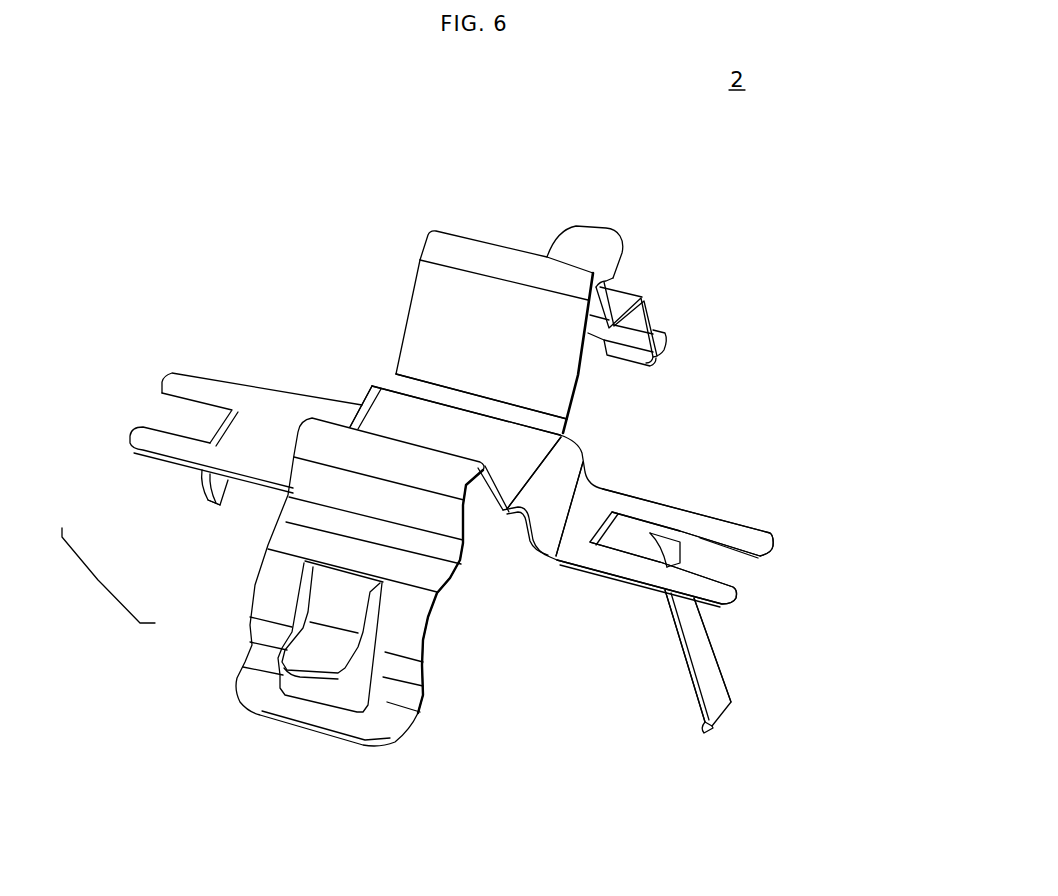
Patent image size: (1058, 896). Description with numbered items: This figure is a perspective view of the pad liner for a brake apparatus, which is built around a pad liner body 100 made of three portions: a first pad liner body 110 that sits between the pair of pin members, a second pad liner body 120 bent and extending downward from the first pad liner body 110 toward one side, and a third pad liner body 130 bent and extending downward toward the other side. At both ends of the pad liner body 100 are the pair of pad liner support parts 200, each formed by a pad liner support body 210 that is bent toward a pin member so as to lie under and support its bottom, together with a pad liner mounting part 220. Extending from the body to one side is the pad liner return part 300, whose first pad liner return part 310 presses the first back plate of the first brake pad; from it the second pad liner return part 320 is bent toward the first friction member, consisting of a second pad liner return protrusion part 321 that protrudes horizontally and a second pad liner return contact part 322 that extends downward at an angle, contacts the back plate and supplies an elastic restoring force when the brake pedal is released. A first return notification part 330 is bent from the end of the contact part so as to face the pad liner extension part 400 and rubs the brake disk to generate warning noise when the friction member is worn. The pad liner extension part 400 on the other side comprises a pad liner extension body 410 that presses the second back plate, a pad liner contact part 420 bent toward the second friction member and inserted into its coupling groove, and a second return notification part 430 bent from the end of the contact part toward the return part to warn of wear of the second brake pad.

The pad liner body 100 is at (520, 474).
The first pad liner body 110 is at (458, 423).
The second pad liner body 120 is at (572, 448).
The third pad liner body 130 is at (360, 407).
The pad liner support part 200 is at (472, 262).
The pad liner support body 210 is at (633, 306).
The pad liner mounting part 220 is at (589, 240).
The pad liner return part 300 is at (745, 496).
The first pad liner return part 310 is at (673, 509).
The second pad liner return part 320 is at (827, 595).
The second pad liner return protrusion part 321 is at (660, 549).
The second pad liner return contact part 322 is at (708, 658).
The first return notification part 330 is at (717, 732).
The pad liner extension part 400 is at (108, 575).
The pad liner extension body 410 is at (192, 384).
The pad liner contact part 420 is at (200, 477).
The second return notification part 430 is at (207, 503).